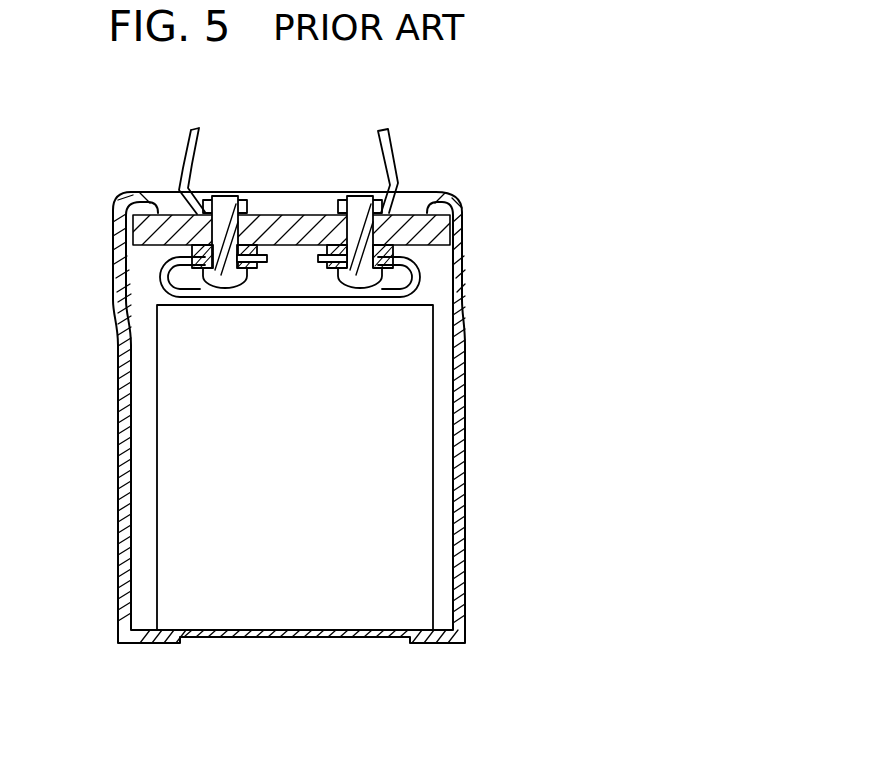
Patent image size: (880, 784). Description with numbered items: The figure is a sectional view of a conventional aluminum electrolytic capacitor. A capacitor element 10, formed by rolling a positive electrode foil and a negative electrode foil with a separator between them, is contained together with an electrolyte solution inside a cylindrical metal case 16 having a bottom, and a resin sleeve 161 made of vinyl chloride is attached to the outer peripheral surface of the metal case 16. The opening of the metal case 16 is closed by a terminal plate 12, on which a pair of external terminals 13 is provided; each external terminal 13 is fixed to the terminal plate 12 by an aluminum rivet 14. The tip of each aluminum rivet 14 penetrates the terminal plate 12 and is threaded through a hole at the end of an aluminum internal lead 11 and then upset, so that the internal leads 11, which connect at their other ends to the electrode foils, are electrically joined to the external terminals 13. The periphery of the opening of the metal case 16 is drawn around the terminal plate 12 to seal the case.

The capacitor element 10 is at (410, 512).
The aluminum internal leads 11 is at (165, 287).
The terminal plate 12 is at (160, 217).
The external terminals 13 is at (192, 142).
The aluminum rivets 14 is at (338, 200).
The metal case 16 is at (462, 567).
The resin sleeve 161 is at (122, 540).